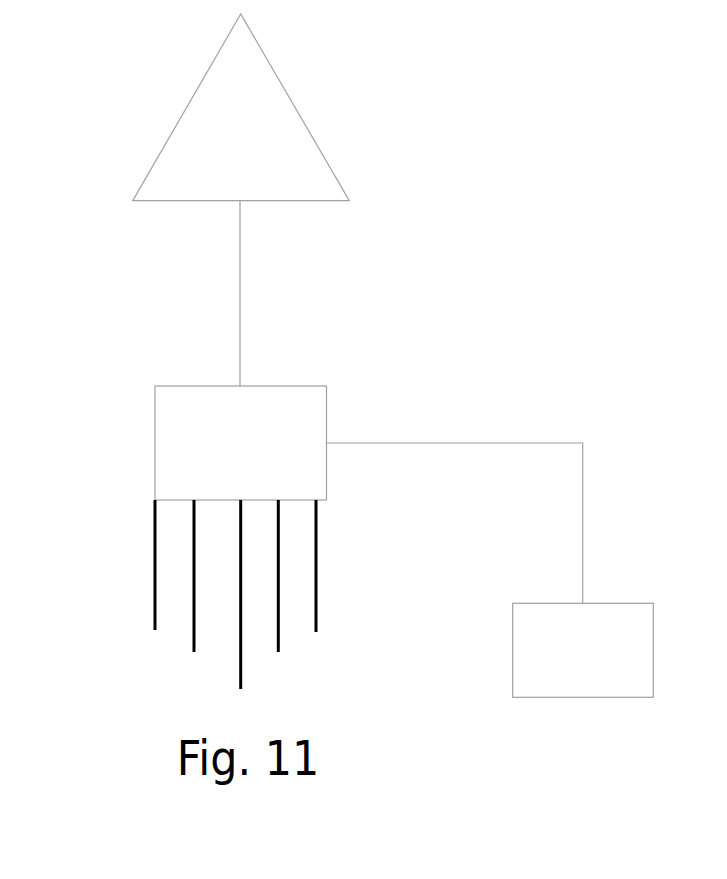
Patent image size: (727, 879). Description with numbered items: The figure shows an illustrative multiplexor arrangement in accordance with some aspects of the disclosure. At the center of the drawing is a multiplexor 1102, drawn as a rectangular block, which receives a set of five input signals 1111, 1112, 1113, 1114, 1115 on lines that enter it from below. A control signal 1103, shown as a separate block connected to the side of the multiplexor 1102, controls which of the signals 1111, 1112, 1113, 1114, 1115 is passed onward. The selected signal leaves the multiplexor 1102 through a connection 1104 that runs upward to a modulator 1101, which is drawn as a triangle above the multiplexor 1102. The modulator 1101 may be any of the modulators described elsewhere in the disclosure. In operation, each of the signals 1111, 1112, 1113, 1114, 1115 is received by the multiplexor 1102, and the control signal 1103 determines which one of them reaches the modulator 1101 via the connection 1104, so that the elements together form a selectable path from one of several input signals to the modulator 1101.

The modulator 1101 is at (241, 107).
The multiplexor 1102 is at (241, 443).
The control signal 1103 is at (490, 570).
The connection 1104 is at (301, 293).
The signal 1111 is at (96, 565).
The signal 1112 is at (129, 590).
The signal 1113 is at (306, 602).
The signal 1114 is at (343, 585).
The signal 1115 is at (377, 566).